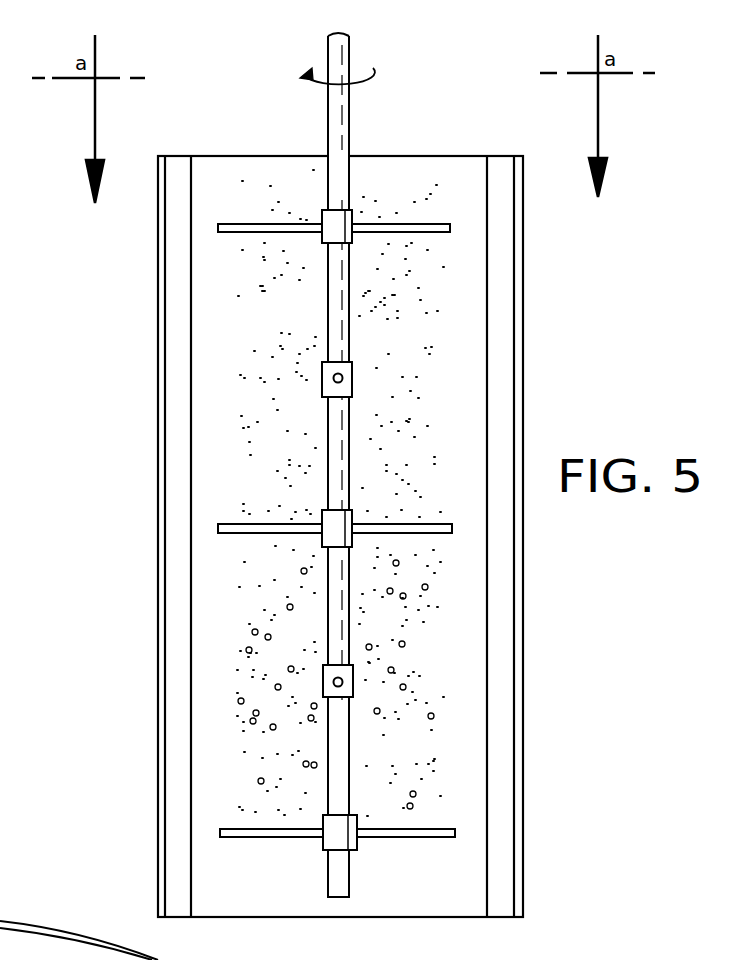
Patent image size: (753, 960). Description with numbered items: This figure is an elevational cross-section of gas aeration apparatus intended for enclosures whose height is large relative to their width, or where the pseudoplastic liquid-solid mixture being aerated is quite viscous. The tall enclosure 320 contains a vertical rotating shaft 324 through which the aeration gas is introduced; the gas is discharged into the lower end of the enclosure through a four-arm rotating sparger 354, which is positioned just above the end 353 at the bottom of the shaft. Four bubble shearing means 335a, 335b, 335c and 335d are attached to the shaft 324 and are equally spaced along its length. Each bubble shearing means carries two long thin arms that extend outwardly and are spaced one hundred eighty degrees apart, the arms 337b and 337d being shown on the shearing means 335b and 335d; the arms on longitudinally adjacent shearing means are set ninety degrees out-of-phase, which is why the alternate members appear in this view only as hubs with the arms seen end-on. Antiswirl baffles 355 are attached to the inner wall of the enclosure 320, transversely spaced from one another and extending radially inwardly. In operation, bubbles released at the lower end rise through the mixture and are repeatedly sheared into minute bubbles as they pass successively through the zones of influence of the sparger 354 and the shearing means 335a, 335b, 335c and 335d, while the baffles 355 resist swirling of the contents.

The tank 320 is at (340, 918).
The rotating shaft 324 is at (339, 178).
The bubble shearing means 335a is at (350, 681).
The bubble shearing means 335b is at (218, 520).
The bubble shearing means 335c is at (348, 379).
The bubble shearing means 335d is at (412, 236).
The paddle blade 337b is at (437, 534).
The paddle blade 337d is at (232, 233).
The end 353 is at (332, 897).
The four arm rotating sparger 354 is at (420, 838).
The antiswirl baffles 355 is at (512, 821).